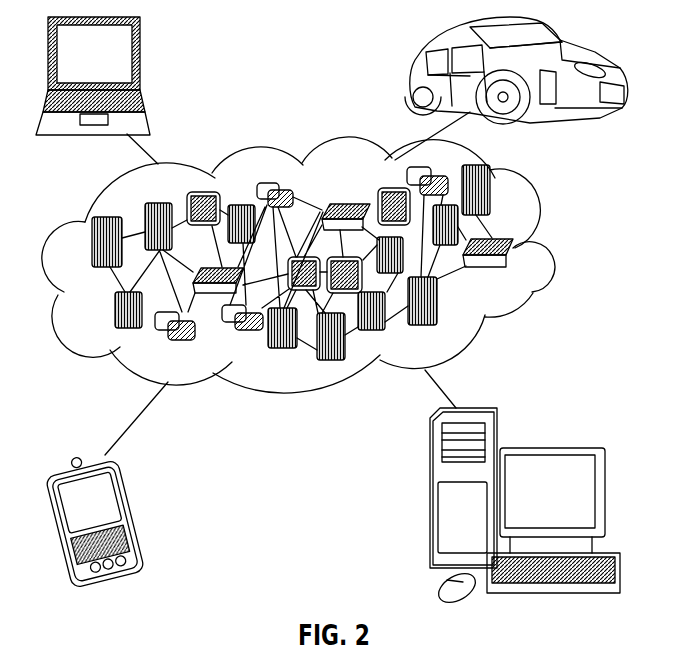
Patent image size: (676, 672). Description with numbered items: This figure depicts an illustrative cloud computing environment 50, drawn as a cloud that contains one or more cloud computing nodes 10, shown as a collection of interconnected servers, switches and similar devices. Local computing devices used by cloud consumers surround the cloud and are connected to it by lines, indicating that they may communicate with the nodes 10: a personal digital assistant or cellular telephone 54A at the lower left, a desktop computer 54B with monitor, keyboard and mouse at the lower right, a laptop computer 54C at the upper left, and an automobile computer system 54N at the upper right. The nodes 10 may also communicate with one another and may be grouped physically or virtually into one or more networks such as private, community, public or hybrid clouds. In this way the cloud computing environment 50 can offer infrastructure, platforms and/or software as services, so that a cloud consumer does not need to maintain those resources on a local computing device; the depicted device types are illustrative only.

The cloud computing node 10 is at (516, 275).
The cloud computing environment 50 is at (550, 247).
The personal digital assistant or cellular telephone 54A is at (131, 512).
The desktop computer 54B is at (548, 448).
The laptop computer 54C is at (140, 61).
The automobile computer system 54N is at (413, 75).